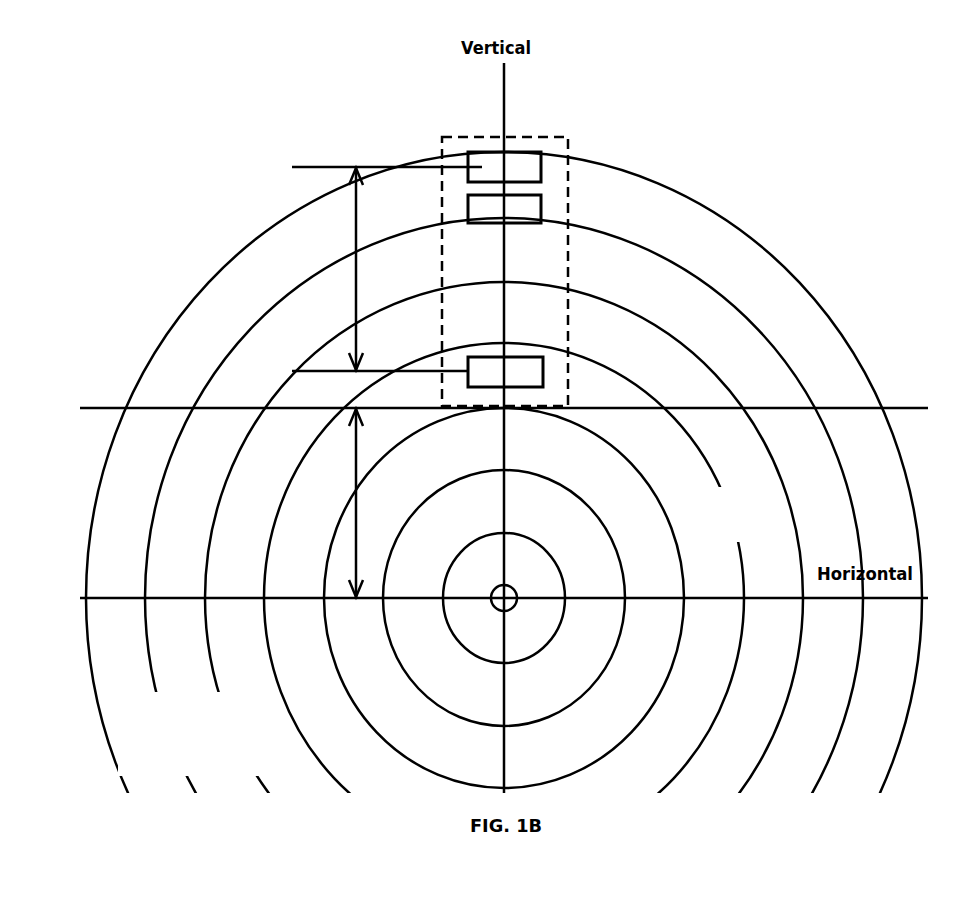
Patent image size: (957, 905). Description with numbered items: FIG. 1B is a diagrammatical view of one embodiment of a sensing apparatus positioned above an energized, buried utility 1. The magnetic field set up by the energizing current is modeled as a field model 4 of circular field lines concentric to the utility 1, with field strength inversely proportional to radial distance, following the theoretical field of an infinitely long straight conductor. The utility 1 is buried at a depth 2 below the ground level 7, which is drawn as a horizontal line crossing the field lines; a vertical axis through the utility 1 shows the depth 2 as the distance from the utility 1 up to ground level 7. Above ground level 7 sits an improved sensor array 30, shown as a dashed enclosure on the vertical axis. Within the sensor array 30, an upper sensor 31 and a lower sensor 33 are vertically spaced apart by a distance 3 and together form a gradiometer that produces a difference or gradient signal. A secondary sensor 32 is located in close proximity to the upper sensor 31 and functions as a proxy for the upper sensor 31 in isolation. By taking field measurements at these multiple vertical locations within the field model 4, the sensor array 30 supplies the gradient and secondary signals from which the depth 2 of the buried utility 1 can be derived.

The utility 1 is at (495, 602).
The depth 2 is at (353, 547).
The distance 3 is at (355, 270).
The field model 4 is at (504, 528).
The ground level 7 is at (848, 408).
The sensor array 30 is at (465, 135).
The upper sensor 31 is at (542, 162).
The secondary sensor 32 is at (542, 207).
The lower sensor 33 is at (545, 369).